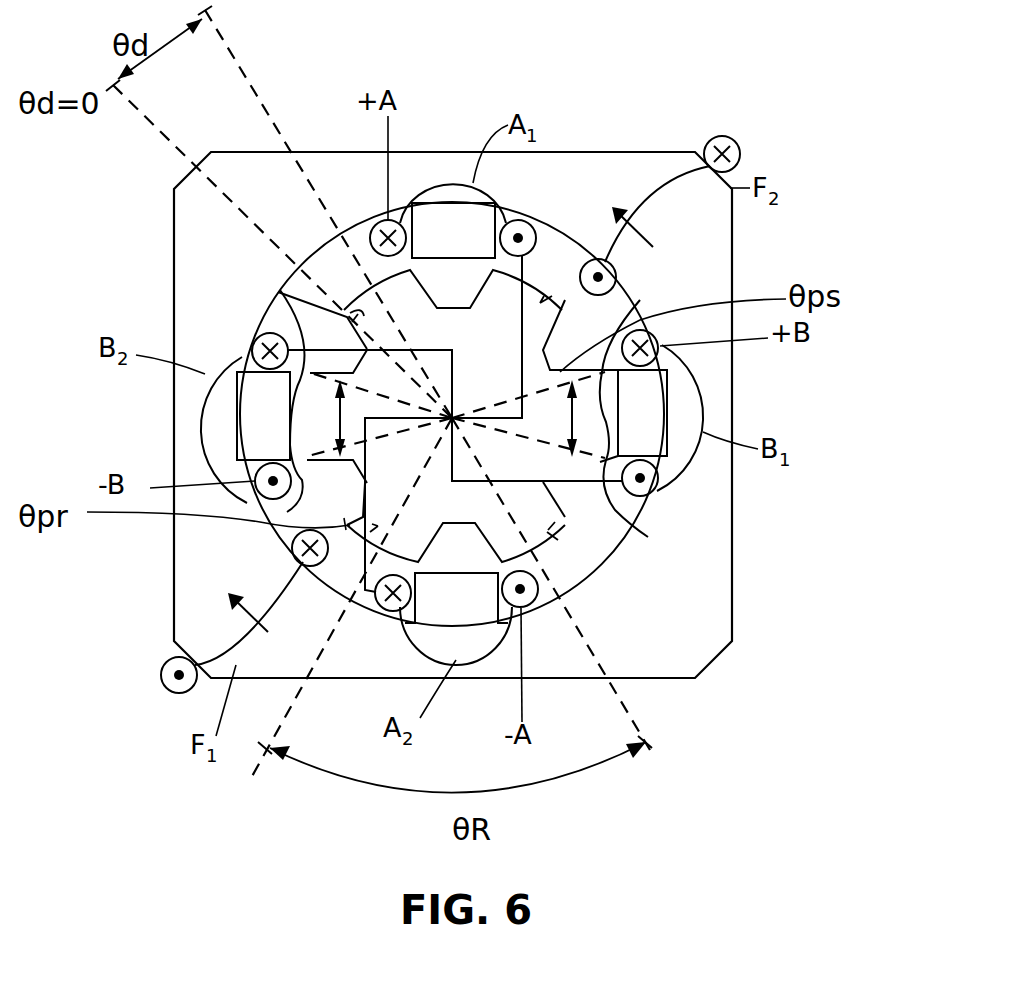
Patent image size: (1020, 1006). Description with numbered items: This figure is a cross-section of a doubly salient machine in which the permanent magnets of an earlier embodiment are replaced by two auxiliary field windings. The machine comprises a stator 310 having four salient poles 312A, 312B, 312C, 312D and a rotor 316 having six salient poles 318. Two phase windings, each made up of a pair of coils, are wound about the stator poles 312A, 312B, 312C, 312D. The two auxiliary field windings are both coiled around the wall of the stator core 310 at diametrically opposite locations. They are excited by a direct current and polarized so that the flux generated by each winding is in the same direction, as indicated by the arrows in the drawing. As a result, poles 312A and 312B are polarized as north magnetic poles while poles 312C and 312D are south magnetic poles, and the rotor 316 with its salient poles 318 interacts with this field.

The stator 310 is at (576, 128).
The stator pole 312A is at (441, 230).
The stator pole 312B is at (246, 432).
The stator pole 312C is at (460, 637).
The stator pole 312D is at (682, 405).
The rotor 316 is at (553, 363).
The rotor salient pole 318 is at (358, 314).